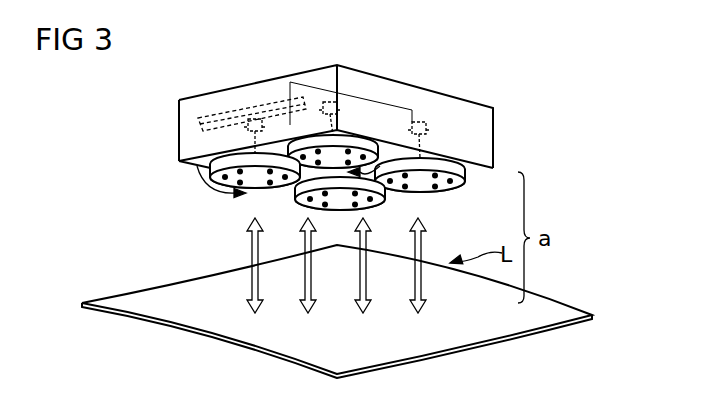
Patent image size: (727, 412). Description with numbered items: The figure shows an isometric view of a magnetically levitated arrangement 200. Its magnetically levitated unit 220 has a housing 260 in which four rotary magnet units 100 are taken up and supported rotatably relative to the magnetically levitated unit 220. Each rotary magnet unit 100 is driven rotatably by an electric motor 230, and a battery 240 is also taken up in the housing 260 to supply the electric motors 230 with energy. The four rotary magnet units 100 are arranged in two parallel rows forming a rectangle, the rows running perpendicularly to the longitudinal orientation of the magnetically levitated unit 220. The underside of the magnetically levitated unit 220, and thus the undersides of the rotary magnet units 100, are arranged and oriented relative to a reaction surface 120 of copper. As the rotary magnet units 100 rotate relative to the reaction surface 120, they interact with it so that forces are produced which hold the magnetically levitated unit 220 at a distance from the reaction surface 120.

The rotary magnet unit 100 is at (210, 187).
The reaction surface 120 is at (148, 290).
The magnetically levitated arrangement 200 is at (576, 172).
The magnetically levitated unit 220 is at (462, 89).
The electric motor 230 is at (420, 120).
The battery 240 is at (236, 110).
The housing 260 is at (170, 126).